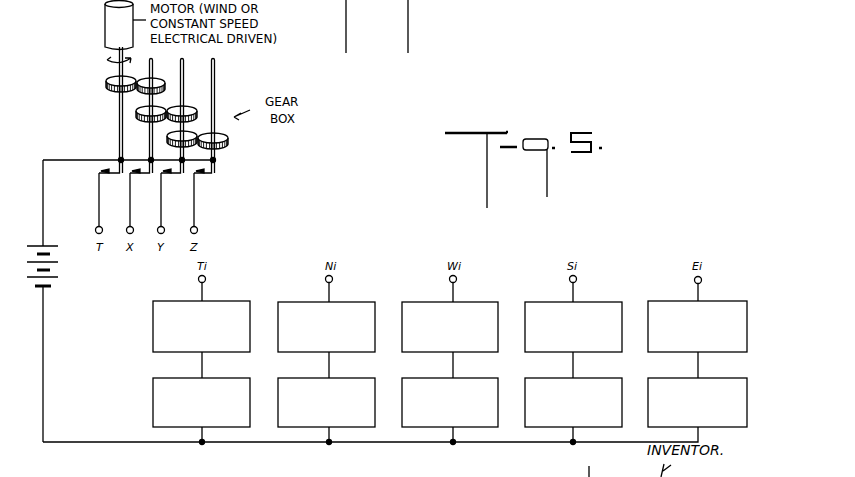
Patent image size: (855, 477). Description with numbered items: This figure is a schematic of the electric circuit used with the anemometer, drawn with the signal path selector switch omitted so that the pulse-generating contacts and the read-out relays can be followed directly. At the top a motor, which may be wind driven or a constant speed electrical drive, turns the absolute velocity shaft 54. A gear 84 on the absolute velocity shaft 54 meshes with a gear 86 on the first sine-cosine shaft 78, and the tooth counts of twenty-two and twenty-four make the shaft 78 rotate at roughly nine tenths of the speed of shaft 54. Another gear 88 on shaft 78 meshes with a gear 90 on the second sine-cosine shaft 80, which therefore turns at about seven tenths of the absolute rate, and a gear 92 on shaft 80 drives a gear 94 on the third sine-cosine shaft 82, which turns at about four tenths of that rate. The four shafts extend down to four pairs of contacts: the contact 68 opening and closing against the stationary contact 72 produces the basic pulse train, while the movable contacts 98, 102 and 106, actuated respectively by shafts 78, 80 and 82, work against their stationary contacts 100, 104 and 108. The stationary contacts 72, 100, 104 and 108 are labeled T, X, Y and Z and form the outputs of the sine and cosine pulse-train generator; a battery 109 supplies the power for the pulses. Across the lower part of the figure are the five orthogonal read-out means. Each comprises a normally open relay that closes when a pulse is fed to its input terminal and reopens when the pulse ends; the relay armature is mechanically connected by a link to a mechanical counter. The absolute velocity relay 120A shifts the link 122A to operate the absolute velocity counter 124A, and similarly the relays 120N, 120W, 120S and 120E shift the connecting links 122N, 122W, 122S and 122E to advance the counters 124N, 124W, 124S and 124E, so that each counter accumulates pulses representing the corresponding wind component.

The absolute velocity shaft 54 is at (112, 65).
The first sine-cosine shaft 78 is at (149, 99).
The second sine-cosine shaft 80 is at (183, 63).
The third sine-cosine shaft 82 is at (215, 72).
The gear 84 is at (106, 82).
The gear 86 is at (139, 90).
The gear 88 is at (137, 114).
The gear 90 is at (184, 108).
The gear 92 is at (169, 138).
The gear 94 is at (227, 145).
The contact 68 is at (118, 176).
The movable contact 98 is at (149, 176).
The movable contact 102 is at (180, 176).
The movable contact 106 is at (208, 178).
The stationary contact 72 is at (99, 212).
The stationary contact 100 is at (130, 212).
The stationary contact 104 is at (161, 212).
The stationary contact 108 is at (194, 212).
The battery 109 is at (60, 263).
The relay 120A is at (156, 308).
The link 122A is at (202, 364).
The absolute velocity counter 124A is at (156, 401).
The relay 120N is at (282, 311).
The link 122N is at (329, 366).
The counter 124N is at (304, 420).
The relay 120W is at (418, 311).
The link 122W is at (453, 366).
The counter 124W is at (432, 422).
The relay 120S is at (545, 296).
The link 122S is at (573, 366).
The counter 124S is at (559, 422).
The relay 120E is at (665, 311).
The link 122E is at (698, 366).
The counter 124E is at (742, 390).